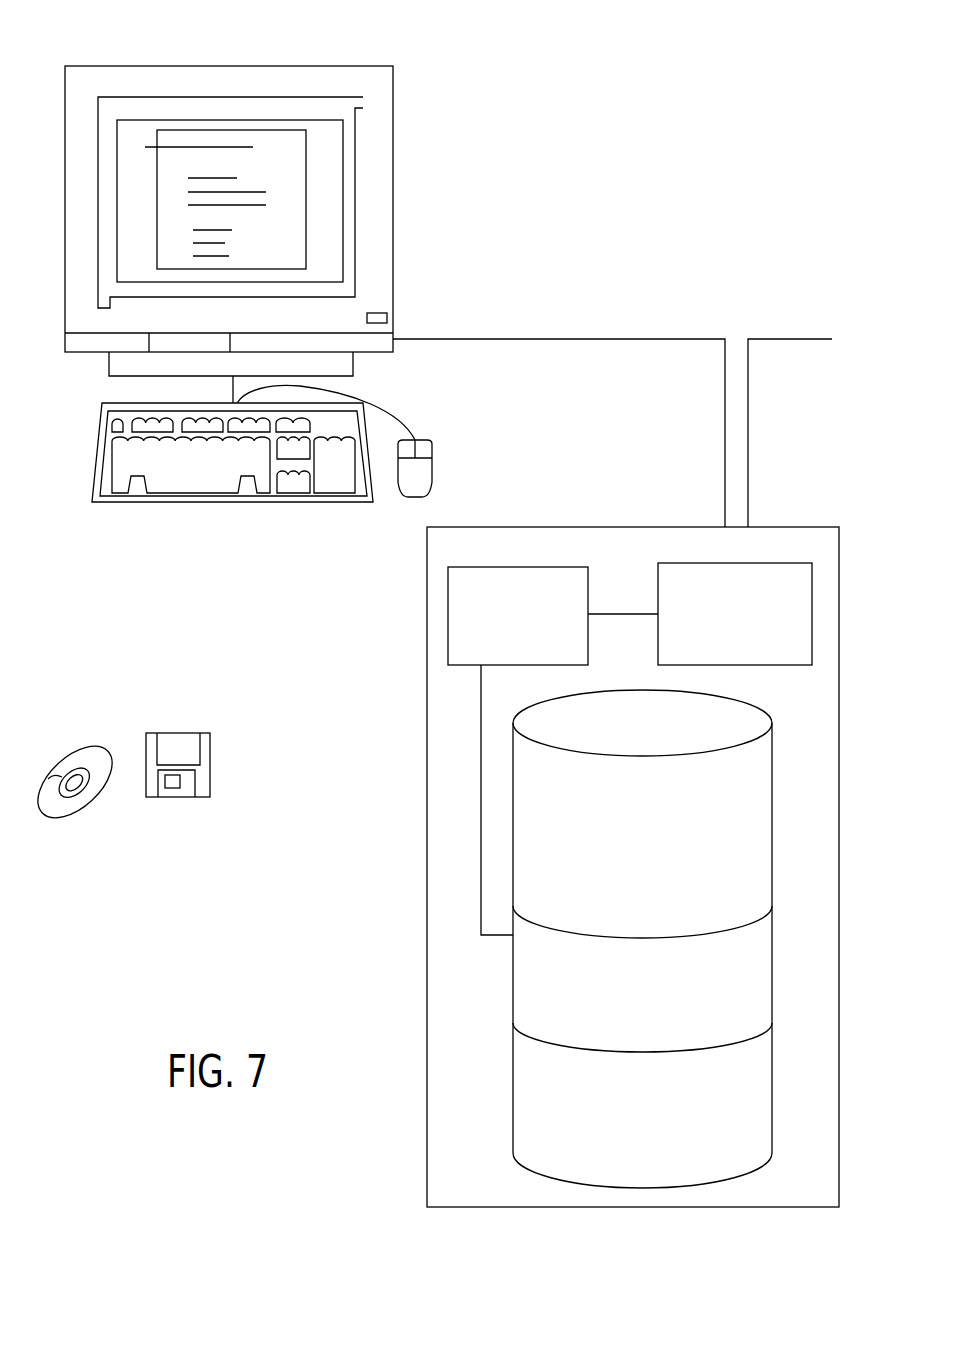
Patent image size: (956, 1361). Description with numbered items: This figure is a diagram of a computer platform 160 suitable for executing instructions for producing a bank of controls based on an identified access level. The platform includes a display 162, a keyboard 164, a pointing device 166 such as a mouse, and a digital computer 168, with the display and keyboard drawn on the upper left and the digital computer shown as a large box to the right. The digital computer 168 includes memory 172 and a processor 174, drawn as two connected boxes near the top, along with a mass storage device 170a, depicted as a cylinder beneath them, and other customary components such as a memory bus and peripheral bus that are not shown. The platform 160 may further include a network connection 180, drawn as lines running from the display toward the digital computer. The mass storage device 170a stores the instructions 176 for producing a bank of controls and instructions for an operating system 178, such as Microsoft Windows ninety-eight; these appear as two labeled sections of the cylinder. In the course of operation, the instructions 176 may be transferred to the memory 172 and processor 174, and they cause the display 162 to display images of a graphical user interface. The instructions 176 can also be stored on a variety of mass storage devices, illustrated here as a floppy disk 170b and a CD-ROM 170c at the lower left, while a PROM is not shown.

The computer platform 160 is at (508, 105).
The display 162 is at (395, 208).
The keyboard 164 is at (213, 503).
The pointing device 166 is at (433, 475).
The digital computer 168 is at (427, 748).
The mass storage device 170a is at (772, 943).
The floppy disk 170b is at (68, 752).
The CD-ROM 170c is at (168, 737).
The memory 172 is at (588, 637).
The processor 174 is at (657, 588).
The instructions for producing a bank of controls 176 is at (750, 771).
The operating system 178 is at (755, 983).
The network connection 180 is at (812, 337).